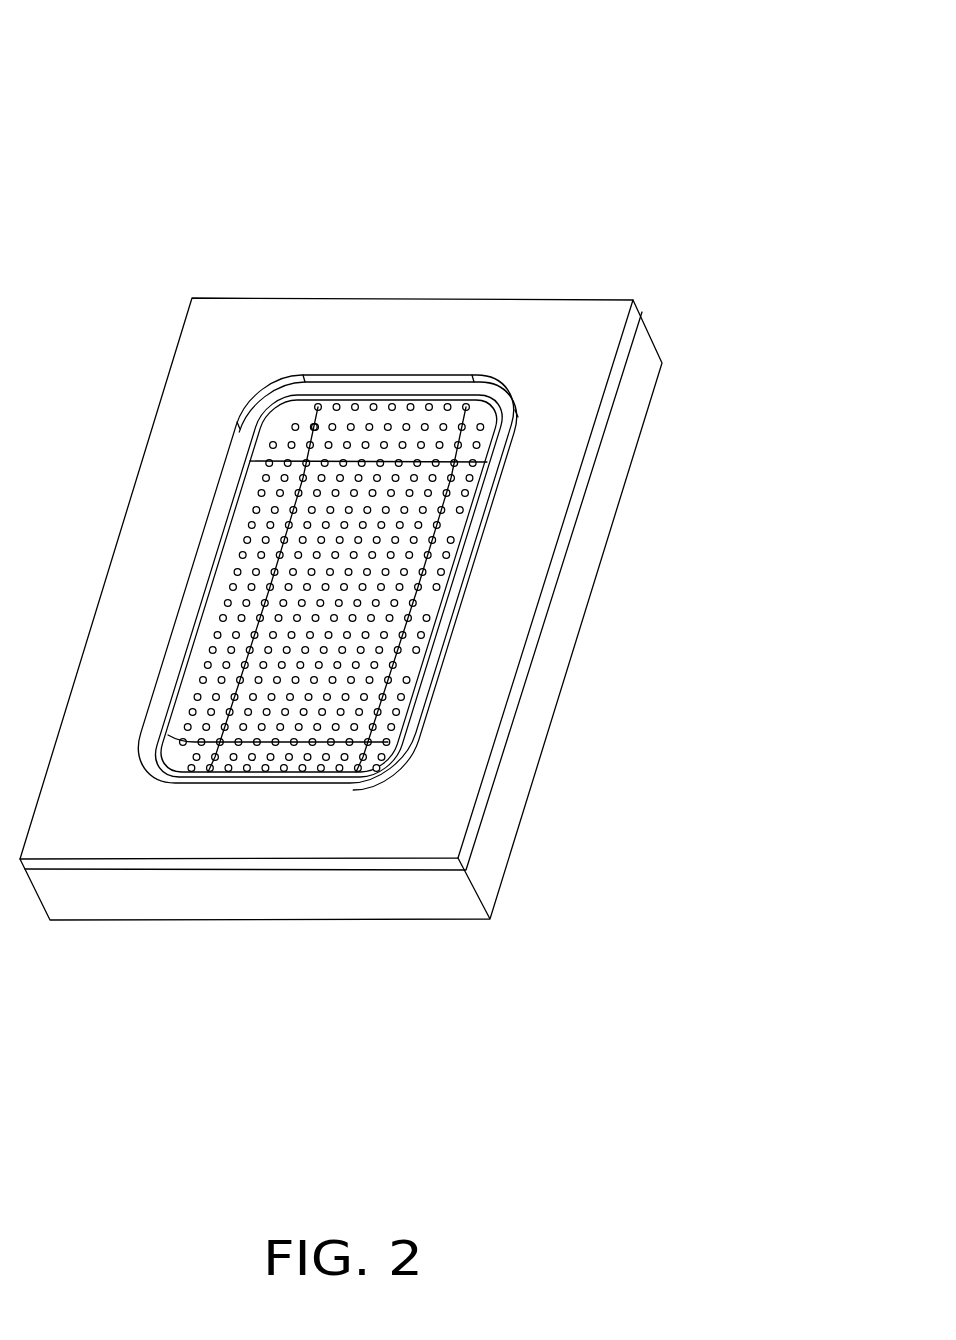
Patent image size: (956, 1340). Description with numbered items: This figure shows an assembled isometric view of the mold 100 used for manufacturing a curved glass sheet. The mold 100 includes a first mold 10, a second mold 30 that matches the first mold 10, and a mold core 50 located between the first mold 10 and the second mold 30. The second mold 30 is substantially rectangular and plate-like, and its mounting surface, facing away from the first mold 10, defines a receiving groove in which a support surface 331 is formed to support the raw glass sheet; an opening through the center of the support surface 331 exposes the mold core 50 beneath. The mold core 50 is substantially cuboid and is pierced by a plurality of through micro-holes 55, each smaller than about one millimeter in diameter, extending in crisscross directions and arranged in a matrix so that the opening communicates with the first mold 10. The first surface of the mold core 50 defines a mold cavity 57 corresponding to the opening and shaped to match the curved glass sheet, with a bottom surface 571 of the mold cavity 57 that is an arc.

The mold 100 is at (327, 55).
The first mold 10 is at (590, 517).
The second mold 30 is at (475, 672).
The support surface 331 is at (493, 396).
The mold core 50 is at (333, 700).
The micro-holes 55 is at (388, 428).
The mold cavity 57 is at (398, 548).
The bottom surface 571 is at (327, 422).